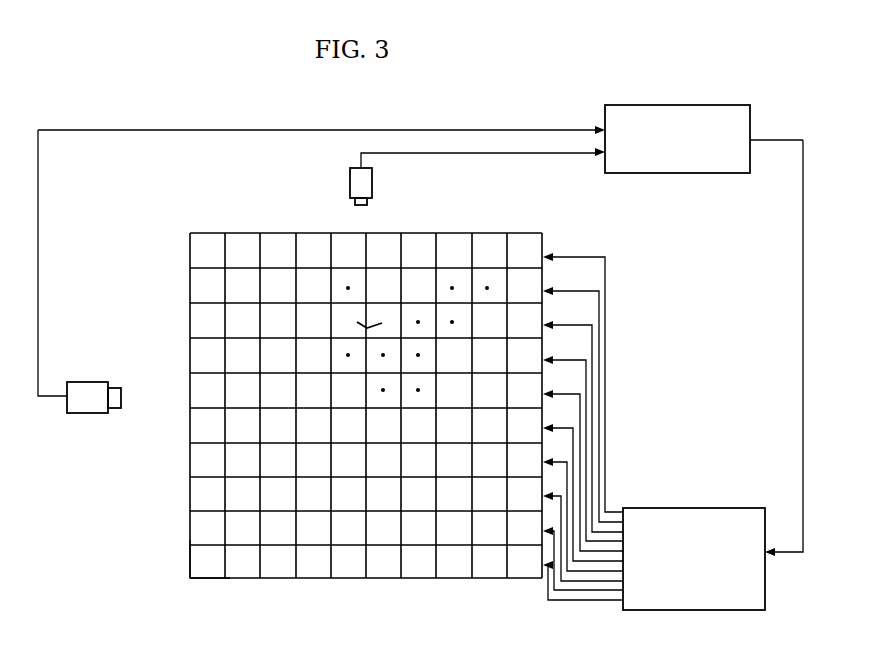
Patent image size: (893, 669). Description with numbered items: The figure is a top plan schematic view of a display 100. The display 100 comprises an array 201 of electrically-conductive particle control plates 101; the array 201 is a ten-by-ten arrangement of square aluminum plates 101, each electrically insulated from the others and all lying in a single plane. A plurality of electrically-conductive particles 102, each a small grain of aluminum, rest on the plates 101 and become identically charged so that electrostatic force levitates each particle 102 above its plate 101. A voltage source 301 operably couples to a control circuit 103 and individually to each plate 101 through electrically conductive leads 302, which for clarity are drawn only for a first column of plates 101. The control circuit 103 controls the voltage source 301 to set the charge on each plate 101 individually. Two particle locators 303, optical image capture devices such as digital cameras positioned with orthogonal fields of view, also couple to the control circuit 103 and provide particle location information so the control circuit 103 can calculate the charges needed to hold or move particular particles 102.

The display 100 is at (405, 643).
The electrically-conductive particle control plate 101 is at (277, 250).
The electrically-conductive particle 102 is at (383, 288).
The control circuit 103 is at (690, 173).
The array 201 is at (192, 556).
The voltage source 301 is at (683, 508).
The electrically conductive lead 302 is at (632, 400).
The particle locator 303 is at (83, 413).